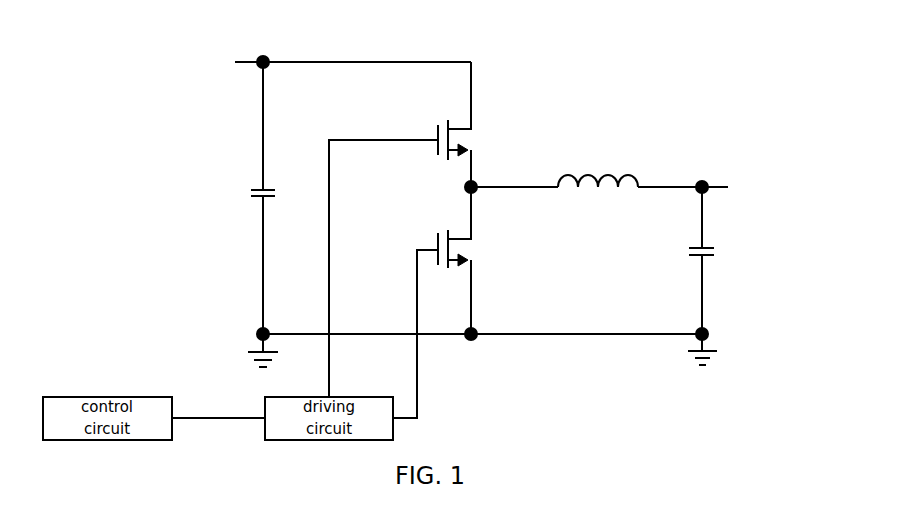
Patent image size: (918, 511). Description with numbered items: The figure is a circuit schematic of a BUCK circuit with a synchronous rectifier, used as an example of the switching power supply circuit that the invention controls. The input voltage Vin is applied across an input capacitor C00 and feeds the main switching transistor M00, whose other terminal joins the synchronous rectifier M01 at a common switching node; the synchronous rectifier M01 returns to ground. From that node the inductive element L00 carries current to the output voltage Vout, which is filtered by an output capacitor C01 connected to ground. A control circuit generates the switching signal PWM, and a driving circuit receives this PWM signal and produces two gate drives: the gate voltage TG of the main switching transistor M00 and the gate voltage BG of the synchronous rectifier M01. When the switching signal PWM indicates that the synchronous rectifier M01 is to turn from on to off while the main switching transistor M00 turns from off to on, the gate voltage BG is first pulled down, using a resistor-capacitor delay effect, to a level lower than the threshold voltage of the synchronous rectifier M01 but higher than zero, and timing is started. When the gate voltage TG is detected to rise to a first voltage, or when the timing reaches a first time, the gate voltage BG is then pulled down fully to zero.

The input voltage Vin is at (329, 54).
The input capacitor C00 is at (245, 198).
The main switching transistor M00 is at (477, 124).
The synchronous rectifier M01 is at (477, 260).
The gate voltage of the main switching transistor TG is at (383, 258).
The gate voltage of the synchronous rectifier BG is at (415, 317).
The inductive element L00 is at (599, 168).
The output voltage Vout is at (735, 180).
The output capacitor C01 is at (721, 260).
The switching signal PWM is at (218, 406).